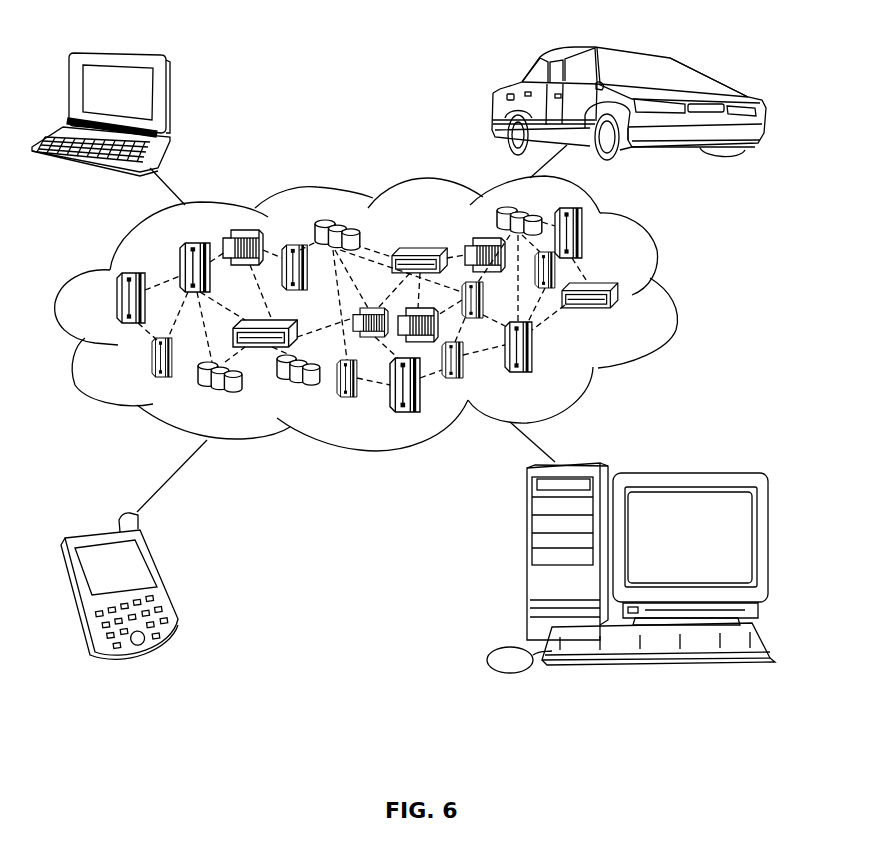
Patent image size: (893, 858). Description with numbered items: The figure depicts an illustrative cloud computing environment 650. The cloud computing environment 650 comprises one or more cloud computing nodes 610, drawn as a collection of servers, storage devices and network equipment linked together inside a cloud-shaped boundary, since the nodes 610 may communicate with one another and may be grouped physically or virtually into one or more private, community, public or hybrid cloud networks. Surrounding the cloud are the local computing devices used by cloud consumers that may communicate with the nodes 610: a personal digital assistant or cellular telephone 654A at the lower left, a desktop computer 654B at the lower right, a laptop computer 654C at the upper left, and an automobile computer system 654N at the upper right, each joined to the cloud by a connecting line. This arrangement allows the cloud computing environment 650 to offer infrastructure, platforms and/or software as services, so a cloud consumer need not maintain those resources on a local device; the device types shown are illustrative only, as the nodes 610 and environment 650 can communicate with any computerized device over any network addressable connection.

The laptop computer 654C is at (165, 95).
The automobile computer system 654N is at (500, 97).
The cloud computing environment 650 is at (658, 263).
The cloud computing nodes 610 is at (648, 316).
The personal digital assistant (PDA) or cellular telephone 654A is at (163, 577).
The desktop computer 654B is at (527, 560).